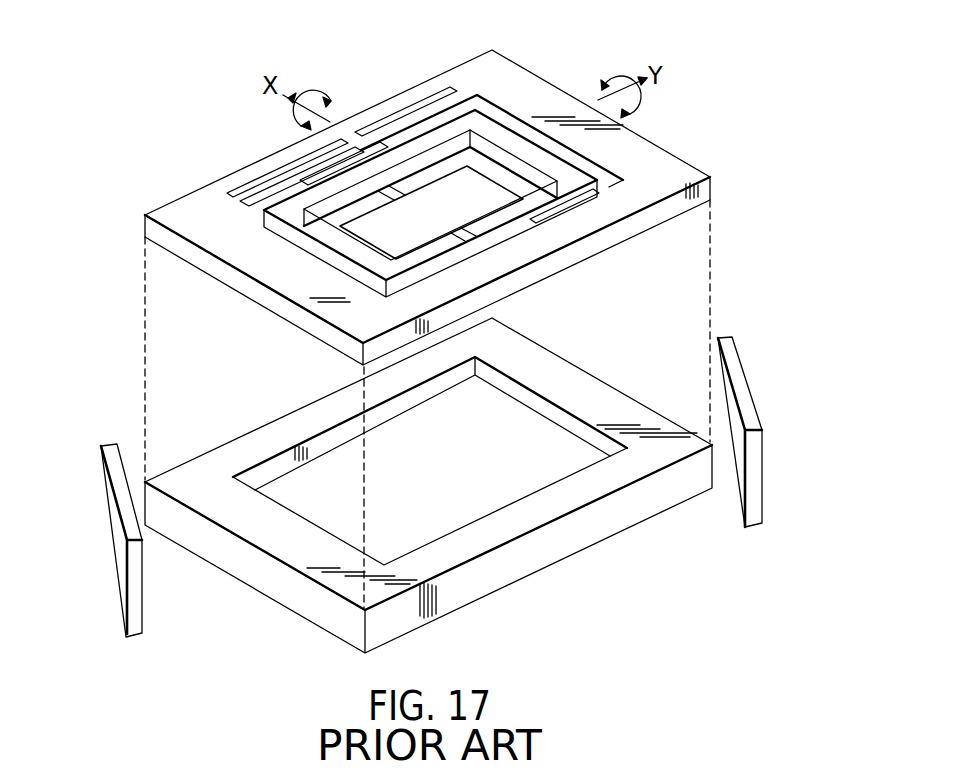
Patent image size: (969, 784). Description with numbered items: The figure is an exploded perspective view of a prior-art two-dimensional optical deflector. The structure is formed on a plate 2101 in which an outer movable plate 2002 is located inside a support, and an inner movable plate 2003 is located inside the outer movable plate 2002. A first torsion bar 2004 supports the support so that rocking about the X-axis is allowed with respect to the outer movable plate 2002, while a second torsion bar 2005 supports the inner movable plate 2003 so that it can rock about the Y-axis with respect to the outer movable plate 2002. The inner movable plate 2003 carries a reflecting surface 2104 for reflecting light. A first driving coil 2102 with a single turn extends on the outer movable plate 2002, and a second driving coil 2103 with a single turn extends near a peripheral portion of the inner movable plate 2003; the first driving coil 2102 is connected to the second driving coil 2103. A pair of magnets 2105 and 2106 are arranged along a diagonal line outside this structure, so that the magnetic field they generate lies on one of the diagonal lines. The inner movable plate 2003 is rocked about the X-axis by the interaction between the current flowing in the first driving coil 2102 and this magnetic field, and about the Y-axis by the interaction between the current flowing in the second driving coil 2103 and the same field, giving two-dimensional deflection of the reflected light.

The substrate plate 2101 is at (478, 72).
The outer movable plate 2002 is at (582, 180).
The inner movable plate 2003 is at (422, 198).
The first torsion bar 2004 is at (500, 238).
The second torsion bar 2005 is at (365, 218).
The first driving coil 2102 is at (505, 130).
The second driving coil 2103 is at (538, 213).
The reflecting surface 2104 is at (367, 173).
The magnet 2105 is at (140, 598).
The magnet 2106 is at (753, 528).